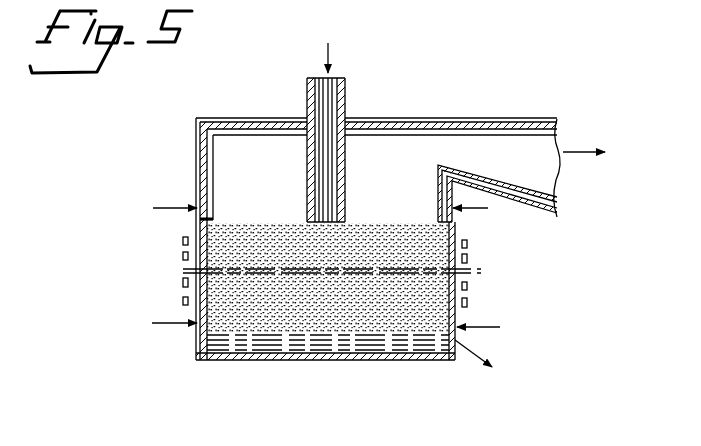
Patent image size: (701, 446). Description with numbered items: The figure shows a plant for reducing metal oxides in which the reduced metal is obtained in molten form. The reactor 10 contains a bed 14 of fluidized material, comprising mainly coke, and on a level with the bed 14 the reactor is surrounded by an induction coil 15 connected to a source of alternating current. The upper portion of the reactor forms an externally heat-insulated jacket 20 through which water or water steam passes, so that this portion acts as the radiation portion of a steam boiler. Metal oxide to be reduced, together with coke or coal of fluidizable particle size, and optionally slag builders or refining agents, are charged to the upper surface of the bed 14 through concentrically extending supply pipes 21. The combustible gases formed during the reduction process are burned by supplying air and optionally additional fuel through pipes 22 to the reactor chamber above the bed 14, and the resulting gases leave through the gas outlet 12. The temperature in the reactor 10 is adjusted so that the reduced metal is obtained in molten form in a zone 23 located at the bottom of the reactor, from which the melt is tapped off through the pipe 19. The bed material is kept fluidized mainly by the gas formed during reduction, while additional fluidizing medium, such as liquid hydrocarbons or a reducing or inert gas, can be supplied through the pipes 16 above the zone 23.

The reactor 10 is at (200, 143).
The gas outlet 12 is at (497, 152).
The bed 14 is at (433, 303).
The induction coil 15 is at (183, 283).
The pipes 16 is at (172, 327).
The pipe 19 is at (480, 353).
The heat-insulated jacket 20 is at (258, 118).
The supply pipes 21 is at (345, 98).
The pipes 22 is at (172, 206).
The zone 23 is at (357, 342).